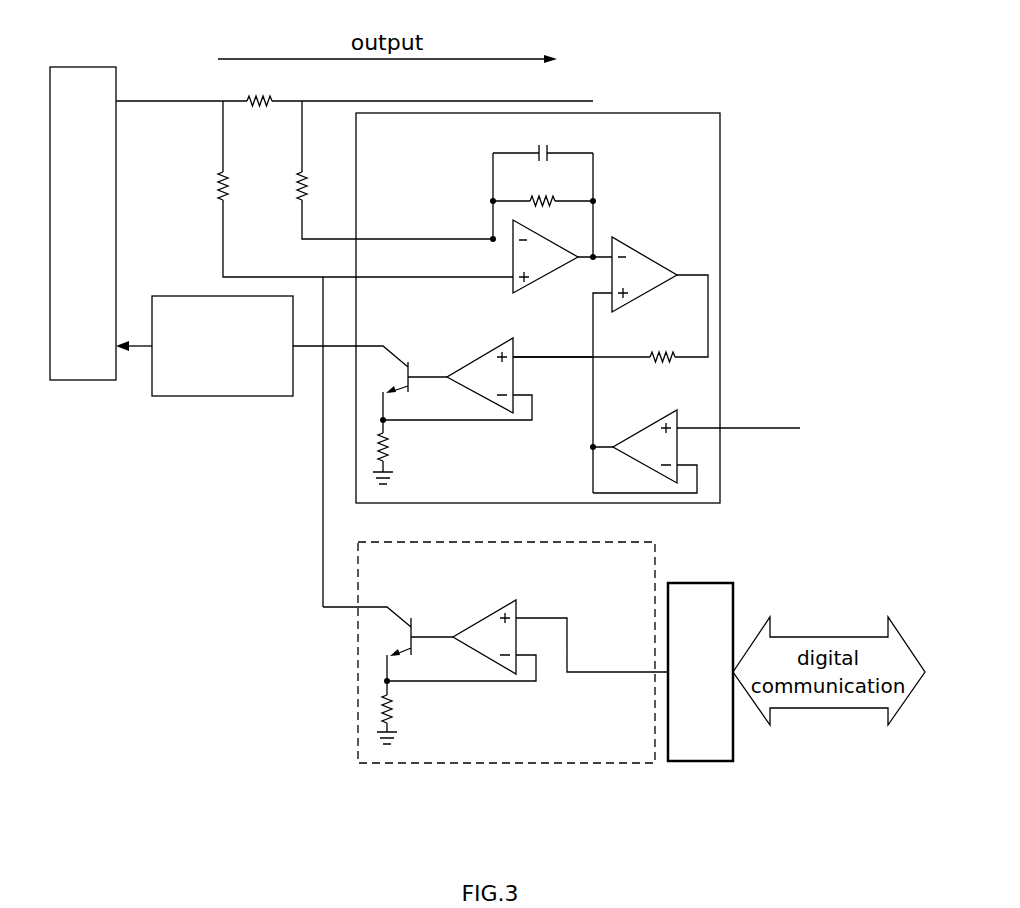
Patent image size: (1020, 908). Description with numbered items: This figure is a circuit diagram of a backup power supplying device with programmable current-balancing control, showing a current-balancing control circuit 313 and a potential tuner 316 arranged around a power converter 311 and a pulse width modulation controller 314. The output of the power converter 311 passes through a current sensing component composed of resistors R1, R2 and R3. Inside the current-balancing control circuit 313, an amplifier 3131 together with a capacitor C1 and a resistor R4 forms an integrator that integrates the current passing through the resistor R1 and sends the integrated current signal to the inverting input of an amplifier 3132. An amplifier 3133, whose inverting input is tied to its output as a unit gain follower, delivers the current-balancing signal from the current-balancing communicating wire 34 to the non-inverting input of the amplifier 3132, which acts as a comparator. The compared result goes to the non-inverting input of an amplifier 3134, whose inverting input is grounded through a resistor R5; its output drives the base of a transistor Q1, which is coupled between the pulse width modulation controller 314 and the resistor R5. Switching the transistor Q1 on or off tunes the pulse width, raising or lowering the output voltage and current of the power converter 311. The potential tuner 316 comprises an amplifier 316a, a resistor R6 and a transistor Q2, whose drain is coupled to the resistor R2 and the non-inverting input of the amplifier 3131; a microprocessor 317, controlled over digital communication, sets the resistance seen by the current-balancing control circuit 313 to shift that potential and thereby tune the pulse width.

The power converter 311 is at (80, 66).
The current-balancing control circuit 313 is at (720, 176).
The amplifier 3131 is at (543, 288).
The amplifier 3132 is at (650, 253).
The amplifier 3133 is at (645, 428).
The amplifier 3134 is at (480, 356).
The pulse width modulation controller 314 is at (222, 397).
The potential tuner 316 is at (358, 667).
The amplifier 316a is at (483, 617).
The microprocessor 317 is at (700, 583).
The current-balancing communicating wire 34 is at (770, 428).
The resistor R1 is at (257, 87).
The resistor R2 is at (365, 189).
The resistor R3 is at (395, 170).
The resistor R4 is at (543, 188).
The resistor R5 is at (398, 452).
The resistor R6 is at (403, 712).
The capacitor C1 is at (543, 189).
The transistor Q1 is at (358, 376).
The transistor Q2 is at (375, 636).